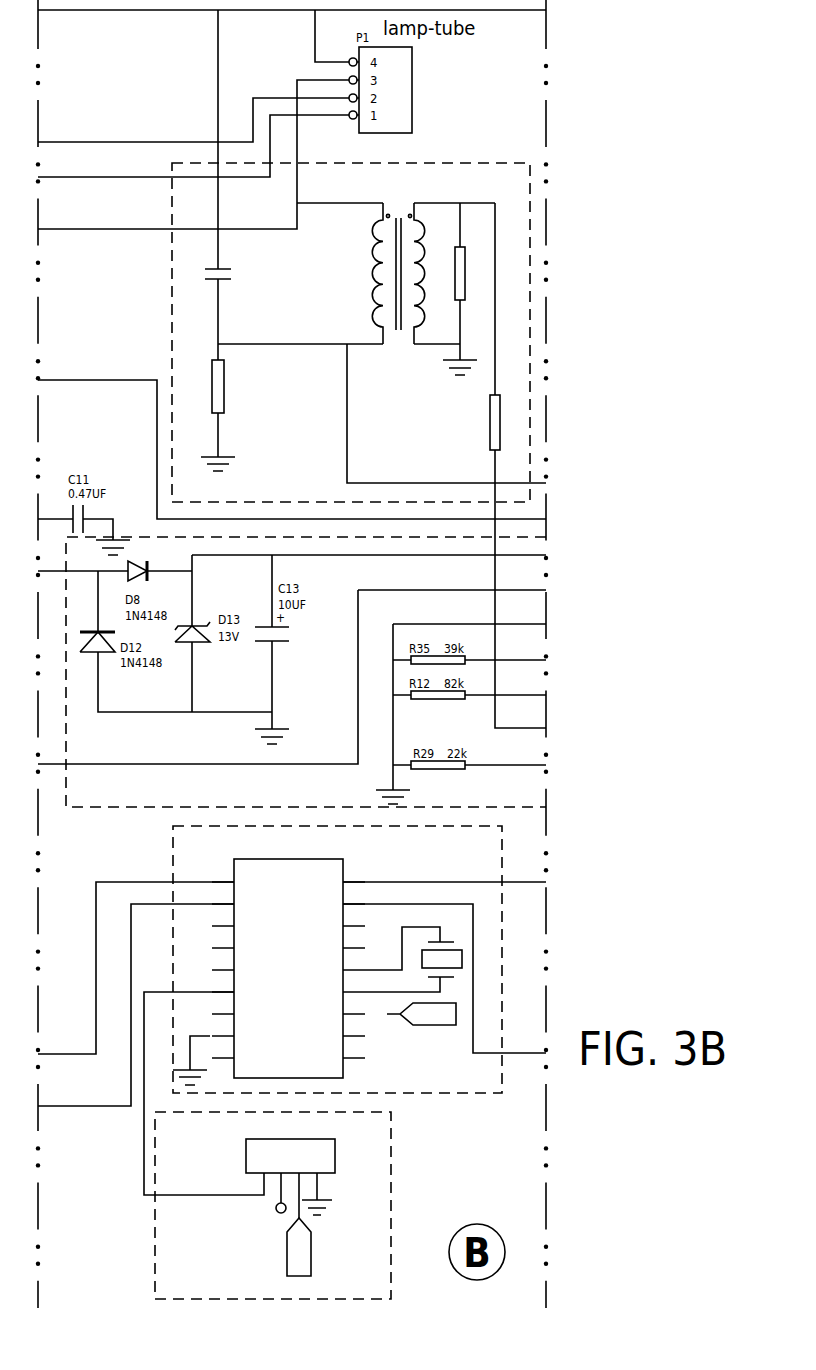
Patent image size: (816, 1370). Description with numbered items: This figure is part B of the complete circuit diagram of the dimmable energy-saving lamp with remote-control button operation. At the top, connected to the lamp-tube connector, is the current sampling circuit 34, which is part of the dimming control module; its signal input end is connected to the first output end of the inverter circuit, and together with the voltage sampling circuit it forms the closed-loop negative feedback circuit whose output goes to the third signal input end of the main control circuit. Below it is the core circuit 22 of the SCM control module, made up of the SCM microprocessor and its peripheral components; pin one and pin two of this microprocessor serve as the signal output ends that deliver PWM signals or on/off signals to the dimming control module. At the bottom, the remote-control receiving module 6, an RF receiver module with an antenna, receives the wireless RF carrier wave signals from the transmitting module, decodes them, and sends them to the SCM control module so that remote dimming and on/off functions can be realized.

The current sampling circuit 34 is at (514, 163).
The core circuit 22 is at (418, 1093).
The remote-control receiving module 6 is at (155, 1220).